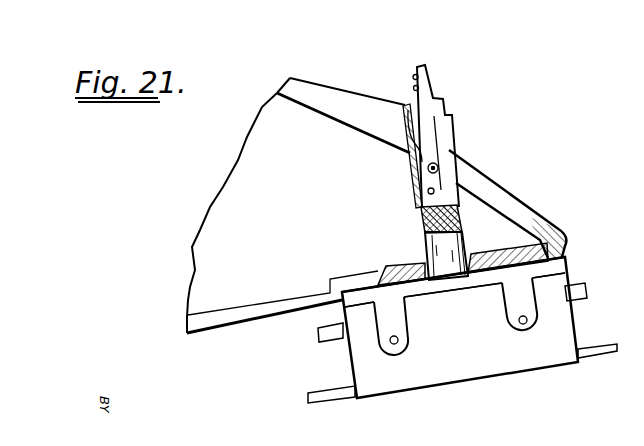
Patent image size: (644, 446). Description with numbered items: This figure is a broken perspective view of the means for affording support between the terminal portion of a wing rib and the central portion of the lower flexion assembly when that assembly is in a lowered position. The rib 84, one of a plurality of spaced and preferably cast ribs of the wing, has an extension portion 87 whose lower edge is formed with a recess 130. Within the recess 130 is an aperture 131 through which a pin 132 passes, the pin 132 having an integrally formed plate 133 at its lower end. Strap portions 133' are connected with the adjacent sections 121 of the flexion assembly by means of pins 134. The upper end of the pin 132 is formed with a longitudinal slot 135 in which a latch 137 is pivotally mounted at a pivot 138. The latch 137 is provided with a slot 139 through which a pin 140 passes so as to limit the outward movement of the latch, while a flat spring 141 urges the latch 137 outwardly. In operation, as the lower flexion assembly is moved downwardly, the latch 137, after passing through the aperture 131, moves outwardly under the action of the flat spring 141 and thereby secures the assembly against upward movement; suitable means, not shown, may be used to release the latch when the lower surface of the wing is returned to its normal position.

The rib 84 is at (192, 247).
The extension portion 87 is at (322, 235).
The sections 121 is at (398, 380).
The recess 130 is at (563, 236).
The aperture 131 is at (472, 266).
The pin 132 is at (452, 220).
The plate 133 is at (488, 275).
The strap portions 133' is at (569, 304).
The pins 134 is at (400, 343).
The longitudinal slot 135 is at (445, 203).
The latch 137 is at (435, 138).
The pivot 138 is at (415, 194).
The slot 139 is at (428, 168).
The pin 140 is at (438, 165).
The flat spring 141 is at (411, 110).